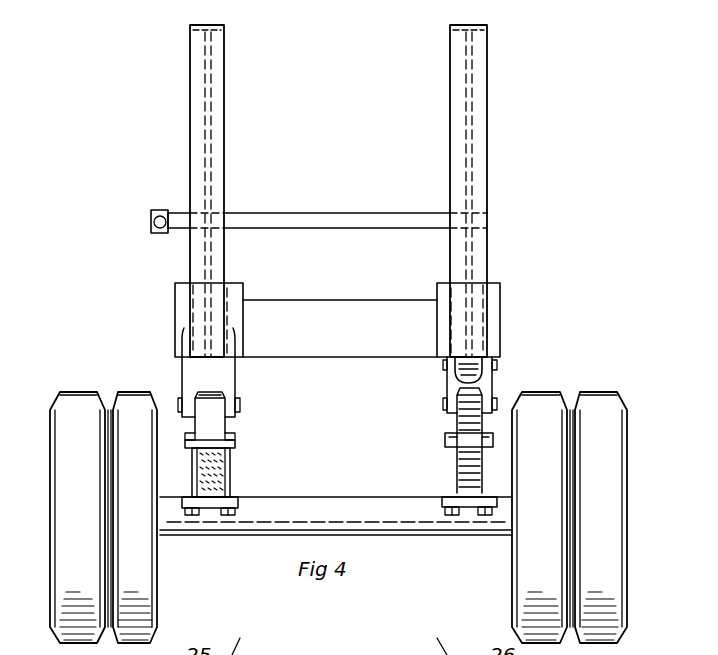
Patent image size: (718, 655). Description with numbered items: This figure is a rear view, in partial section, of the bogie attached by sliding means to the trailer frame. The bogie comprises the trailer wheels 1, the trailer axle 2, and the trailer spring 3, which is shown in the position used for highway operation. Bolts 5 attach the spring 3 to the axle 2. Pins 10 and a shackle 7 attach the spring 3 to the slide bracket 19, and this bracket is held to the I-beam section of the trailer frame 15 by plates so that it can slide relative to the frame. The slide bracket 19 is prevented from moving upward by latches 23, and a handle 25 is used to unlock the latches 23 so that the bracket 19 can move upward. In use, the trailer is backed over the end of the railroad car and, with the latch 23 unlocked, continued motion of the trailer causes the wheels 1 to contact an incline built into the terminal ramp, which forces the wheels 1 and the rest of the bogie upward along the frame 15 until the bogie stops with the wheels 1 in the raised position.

The trailer wheels 1 is at (66, 591).
The trailer axle 2 is at (421, 533).
The trailer spring 3 is at (232, 469).
The bolts 5 is at (232, 488).
The shackle 7 is at (486, 383).
The pins 10 is at (240, 407).
The trailer frame 15 is at (218, 194).
The slide bracket 19 is at (222, 381).
The latches 23 is at (198, 207).
The handle 25 is at (154, 221).